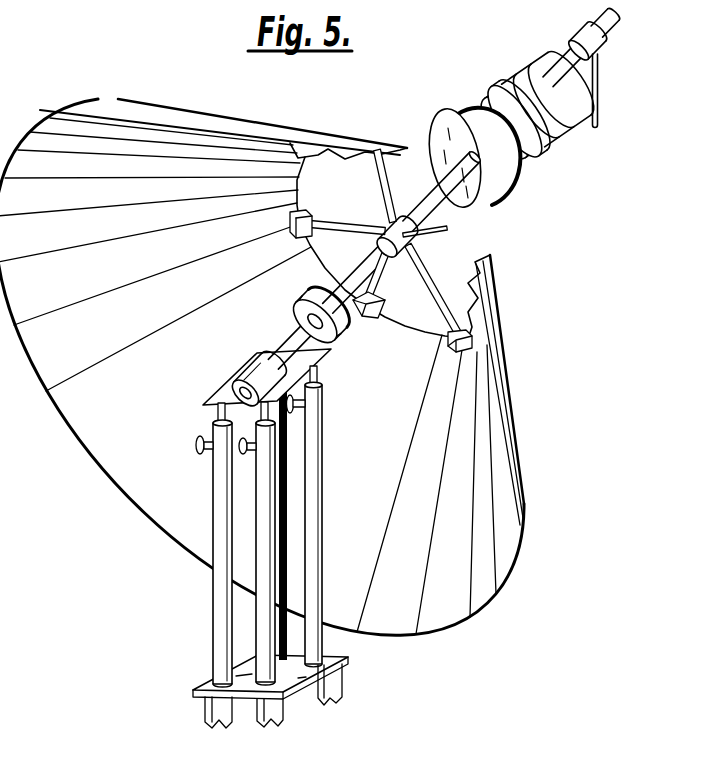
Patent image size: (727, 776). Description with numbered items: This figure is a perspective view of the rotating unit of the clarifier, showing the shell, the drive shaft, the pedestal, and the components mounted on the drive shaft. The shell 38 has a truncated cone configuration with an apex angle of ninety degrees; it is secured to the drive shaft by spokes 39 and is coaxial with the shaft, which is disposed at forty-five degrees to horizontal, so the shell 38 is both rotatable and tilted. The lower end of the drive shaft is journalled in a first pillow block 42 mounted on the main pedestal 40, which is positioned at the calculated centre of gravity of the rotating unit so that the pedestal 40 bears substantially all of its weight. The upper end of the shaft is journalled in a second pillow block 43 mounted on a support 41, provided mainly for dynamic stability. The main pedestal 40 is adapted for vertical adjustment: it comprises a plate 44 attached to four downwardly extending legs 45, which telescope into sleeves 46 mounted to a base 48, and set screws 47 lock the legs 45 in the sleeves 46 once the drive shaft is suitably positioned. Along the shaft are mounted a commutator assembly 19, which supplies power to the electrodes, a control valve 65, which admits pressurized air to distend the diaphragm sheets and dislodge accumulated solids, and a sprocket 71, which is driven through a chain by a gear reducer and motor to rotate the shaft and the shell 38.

The commutator assembly 19 is at (533, 150).
The shell 38 is at (524, 555).
The spokes 39 is at (426, 272).
The main pedestal 40 is at (212, 608).
The support 41 is at (599, 97).
The first pillow block 42 is at (244, 372).
The second pillow block 43 is at (602, 52).
The plate 44 is at (329, 348).
The legs 45 is at (321, 370).
The sleeves 46 is at (320, 477).
The set screws 47 is at (195, 446).
The base 48 is at (348, 656).
The control valve 65 is at (306, 290).
The sprocket 71 is at (495, 203).